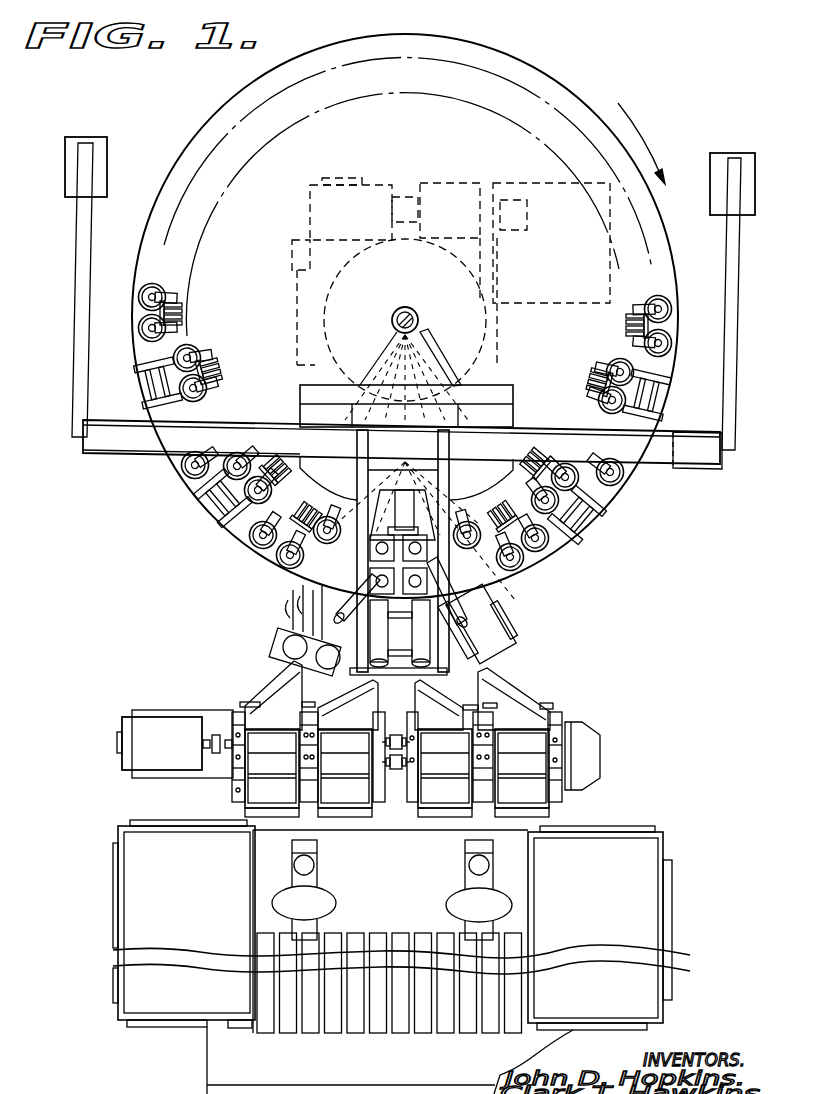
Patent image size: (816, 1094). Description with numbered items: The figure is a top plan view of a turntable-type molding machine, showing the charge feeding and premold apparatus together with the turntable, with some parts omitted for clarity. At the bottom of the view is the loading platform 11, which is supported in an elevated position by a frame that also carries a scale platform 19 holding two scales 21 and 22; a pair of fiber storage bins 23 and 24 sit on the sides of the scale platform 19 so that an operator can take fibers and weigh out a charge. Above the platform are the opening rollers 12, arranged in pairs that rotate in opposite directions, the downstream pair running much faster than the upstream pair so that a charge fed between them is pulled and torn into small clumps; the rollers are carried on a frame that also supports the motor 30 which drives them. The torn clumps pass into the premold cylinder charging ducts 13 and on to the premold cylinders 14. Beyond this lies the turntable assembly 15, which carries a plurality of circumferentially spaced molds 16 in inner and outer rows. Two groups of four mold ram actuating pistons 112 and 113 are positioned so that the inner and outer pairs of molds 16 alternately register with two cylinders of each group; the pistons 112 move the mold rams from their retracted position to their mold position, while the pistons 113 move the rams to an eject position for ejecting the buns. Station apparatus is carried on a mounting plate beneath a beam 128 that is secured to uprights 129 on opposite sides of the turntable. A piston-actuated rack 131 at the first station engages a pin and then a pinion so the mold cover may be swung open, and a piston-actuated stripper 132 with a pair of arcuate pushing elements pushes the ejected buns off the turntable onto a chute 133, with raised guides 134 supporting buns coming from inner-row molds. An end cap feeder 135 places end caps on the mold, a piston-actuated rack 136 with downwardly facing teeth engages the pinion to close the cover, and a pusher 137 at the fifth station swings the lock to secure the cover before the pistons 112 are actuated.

The loading platform 11 is at (400, 935).
The opening rollers 12 is at (240, 802).
The premold cylinder charging ducts 13 is at (528, 678).
The premold cylinders 14 is at (370, 580).
The turntable assembly 15 is at (544, 62).
The molds 16 is at (550, 570).
The scale platform 19 is at (440, 884).
The scale 21 is at (314, 877).
The scale 22 is at (487, 882).
The fiber storage bin 23 is at (188, 900).
The fiber storage bin 24 is at (612, 900).
The motor 30 is at (155, 738).
The mold ram actuating piston 112 is at (248, 562).
The mold ram actuating piston 113 is at (501, 551).
The beam 128 is at (152, 440).
The uprights 129 is at (116, 408).
The piston-actuated rack 131 is at (528, 432).
The piston-actuated stripper 132 is at (407, 453).
The chute 133 is at (500, 648).
The raised guides 134 is at (470, 565).
The end cap feeder 135 is at (290, 617).
The piston-actuated rack 136 is at (360, 480).
The pusher 137 is at (335, 439).